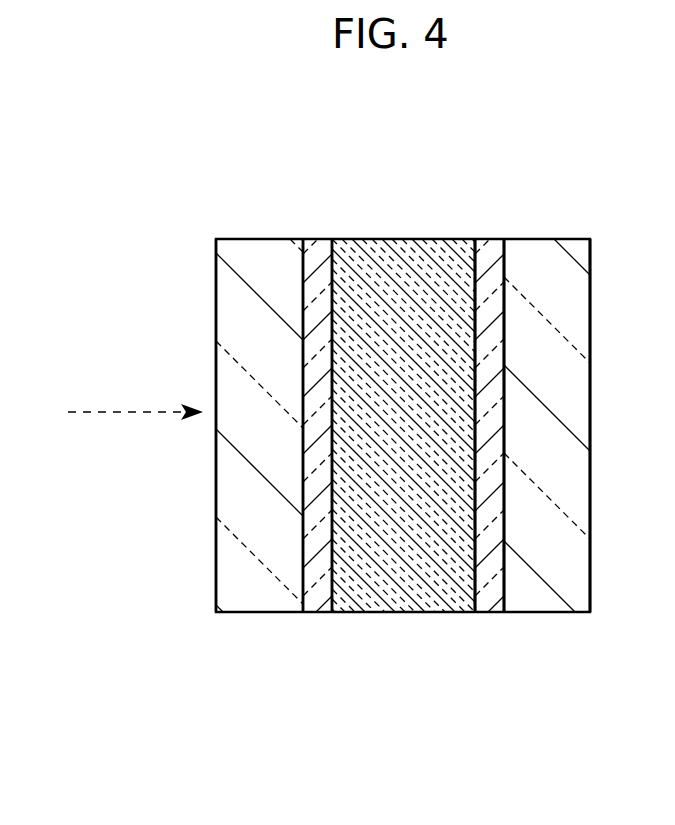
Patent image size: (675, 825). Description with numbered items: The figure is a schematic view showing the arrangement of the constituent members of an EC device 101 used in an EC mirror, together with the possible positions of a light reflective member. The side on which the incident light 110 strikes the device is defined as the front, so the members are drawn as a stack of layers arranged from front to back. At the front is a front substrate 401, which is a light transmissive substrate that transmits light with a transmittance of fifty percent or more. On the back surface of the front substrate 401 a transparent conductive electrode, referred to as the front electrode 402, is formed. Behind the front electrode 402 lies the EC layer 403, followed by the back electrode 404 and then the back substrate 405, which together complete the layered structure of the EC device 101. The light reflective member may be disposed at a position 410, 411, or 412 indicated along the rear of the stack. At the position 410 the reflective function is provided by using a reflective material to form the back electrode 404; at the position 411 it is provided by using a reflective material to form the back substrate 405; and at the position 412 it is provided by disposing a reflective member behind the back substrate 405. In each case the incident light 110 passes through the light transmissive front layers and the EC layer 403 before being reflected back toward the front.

The EC device 101 is at (593, 715).
The incident light 110 is at (92, 412).
The front substrate 401 is at (256, 252).
The front electrode 402 is at (325, 252).
The EC layer 403 is at (415, 252).
The back electrode 404 is at (491, 252).
The back substrate 405 is at (550, 252).
The position 410 is at (475, 630).
The position 411 is at (504, 630).
The position 412 is at (590, 630).